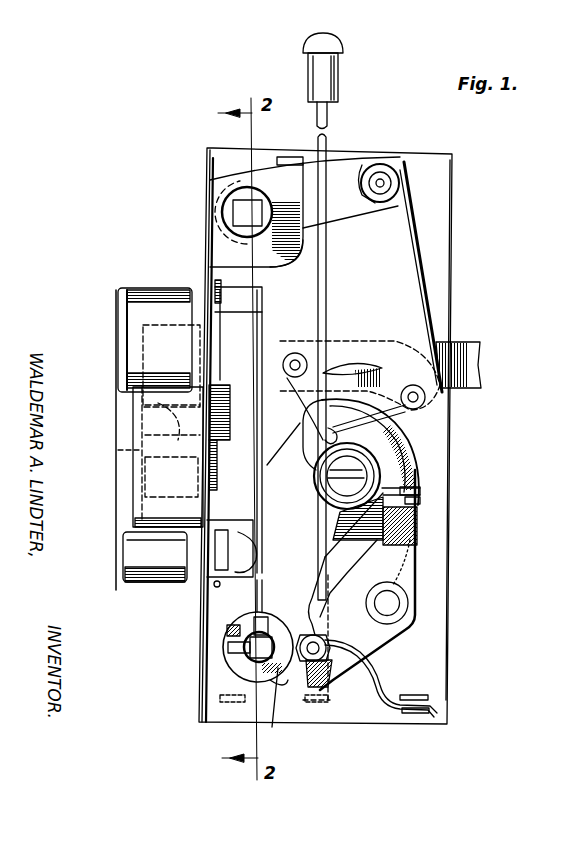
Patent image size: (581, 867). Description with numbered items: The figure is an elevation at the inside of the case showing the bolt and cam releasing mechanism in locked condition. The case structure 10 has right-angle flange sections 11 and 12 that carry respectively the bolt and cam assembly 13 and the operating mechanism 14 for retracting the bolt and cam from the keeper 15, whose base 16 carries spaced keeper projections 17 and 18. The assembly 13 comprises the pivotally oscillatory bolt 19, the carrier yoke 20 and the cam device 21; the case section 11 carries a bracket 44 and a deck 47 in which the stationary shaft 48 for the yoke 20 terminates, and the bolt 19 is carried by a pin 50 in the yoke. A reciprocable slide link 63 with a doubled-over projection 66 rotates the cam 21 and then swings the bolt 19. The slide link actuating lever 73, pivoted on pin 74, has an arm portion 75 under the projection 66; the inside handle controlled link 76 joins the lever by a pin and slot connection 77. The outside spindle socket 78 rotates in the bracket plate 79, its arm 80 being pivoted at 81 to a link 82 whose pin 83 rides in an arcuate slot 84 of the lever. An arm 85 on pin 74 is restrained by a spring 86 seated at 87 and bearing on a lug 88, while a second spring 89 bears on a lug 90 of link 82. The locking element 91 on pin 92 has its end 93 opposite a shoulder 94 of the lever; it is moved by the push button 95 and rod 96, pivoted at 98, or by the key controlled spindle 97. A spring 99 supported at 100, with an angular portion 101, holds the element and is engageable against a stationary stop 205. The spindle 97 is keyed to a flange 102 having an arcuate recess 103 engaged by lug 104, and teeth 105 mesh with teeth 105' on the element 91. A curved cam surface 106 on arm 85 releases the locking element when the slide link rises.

The case structure 10 is at (200, 172).
The case section 11 is at (222, 207).
The case section 12 is at (443, 260).
The bolt and cam assembly 13 is at (125, 426).
The operating mechanism 14 is at (441, 317).
The keeper 15 is at (108, 316).
The base 16 is at (117, 481).
The keeper projection 17 is at (158, 290).
The keeper projection 18 is at (118, 585).
The bolt 19 is at (133, 348).
The carrier yoke 20 is at (172, 502).
The cam device 21 is at (215, 450).
The bracket 44 is at (145, 513).
The deck 47 is at (260, 332).
The stationary shaft 48 is at (215, 477).
The pin 50 is at (118, 450).
The slide link 63 is at (213, 586).
The projection 66 is at (266, 517).
The slide link actuating lever 73 is at (410, 442).
The pin 74 is at (340, 458).
The arm portion 75 is at (260, 575).
The inside handle controlled link 76 is at (470, 355).
The pin and slot connection 77 is at (296, 346).
The spindle socket 78 is at (224, 210).
The bracket plate 79 is at (284, 262).
The arm 80 is at (347, 167).
The pivotal connection 81 is at (380, 182).
The link 82 is at (402, 228).
The pin 83 is at (425, 393).
The arcuate slot 84 is at (350, 368).
The arm 85 is at (300, 447).
The spring 86 is at (395, 497).
The spring seat 87 is at (327, 477).
The lug 88 is at (330, 437).
The second spring 89 is at (413, 451).
The lug 90 is at (426, 398).
The locking element 91 is at (423, 543).
The pin 92 is at (387, 603).
The end 93 is at (414, 520).
The shoulder 94 is at (412, 506).
The push button 95 is at (327, 70).
The push button rod 96 is at (326, 111).
The key controlled spindle 97 is at (232, 667).
The pivot 98 is at (333, 675).
The spring 99 is at (378, 658).
The spring support 100 is at (425, 695).
The angular portion 101 is at (317, 593).
The flange 102 is at (228, 655).
The arcuate recess 103 is at (227, 630).
The lug 104 is at (228, 647).
The teeth 105 is at (261, 710).
The teeth 105' is at (330, 731).
The curved cam surface 106 is at (405, 480).
The stationary stop 205 is at (326, 562).